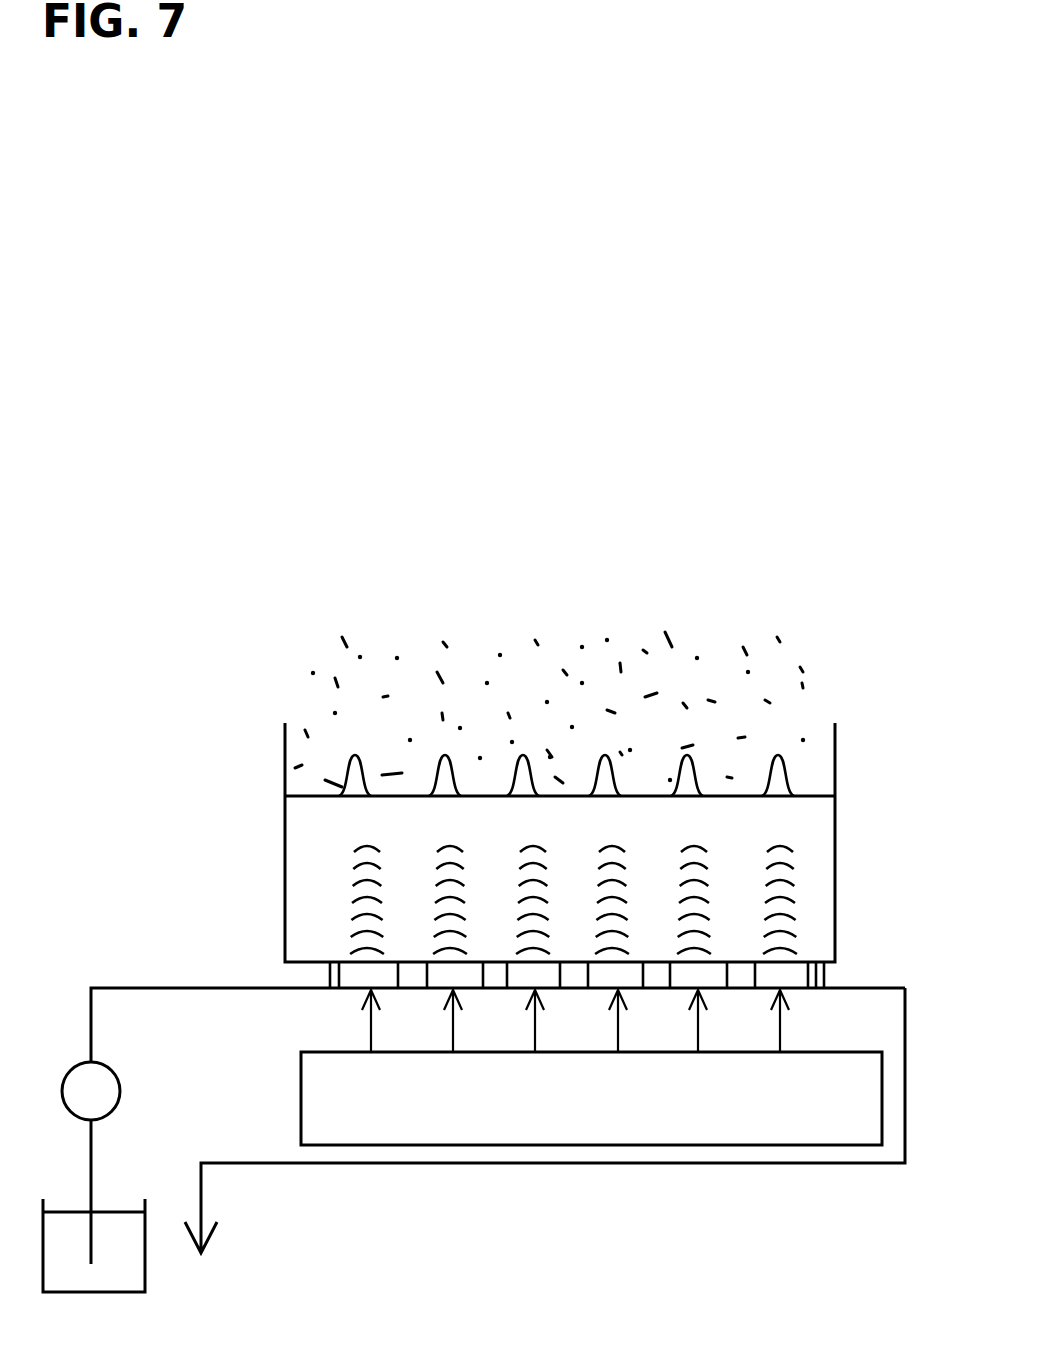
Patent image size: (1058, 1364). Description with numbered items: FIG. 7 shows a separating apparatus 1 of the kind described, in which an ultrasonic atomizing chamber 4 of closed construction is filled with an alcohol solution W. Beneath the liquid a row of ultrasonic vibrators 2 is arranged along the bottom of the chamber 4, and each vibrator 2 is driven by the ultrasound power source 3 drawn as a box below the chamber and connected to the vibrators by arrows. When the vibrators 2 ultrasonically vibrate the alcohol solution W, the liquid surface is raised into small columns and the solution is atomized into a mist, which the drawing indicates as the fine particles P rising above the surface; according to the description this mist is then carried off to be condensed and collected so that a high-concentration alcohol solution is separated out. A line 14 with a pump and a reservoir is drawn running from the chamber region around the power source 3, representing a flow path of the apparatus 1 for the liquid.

The ultrasonic cleaning apparatus 1 is at (274, 1083).
The ultrasonic transducer 2 is at (442, 972).
The ultrasound power source 3 is at (660, 1146).
The ultrasonic atomizing chamber 4 is at (814, 746).
The circulation conduit with pump 14 is at (201, 987).
The particles P is at (358, 753).
The cleaning liquid W is at (585, 768).